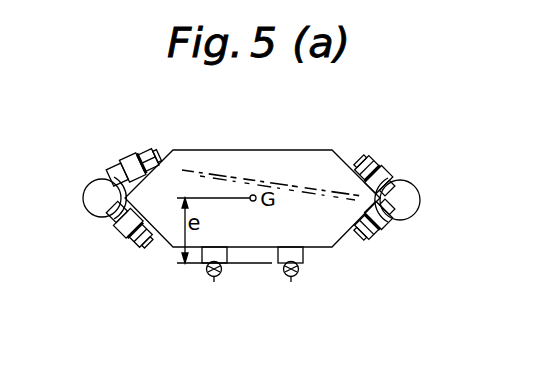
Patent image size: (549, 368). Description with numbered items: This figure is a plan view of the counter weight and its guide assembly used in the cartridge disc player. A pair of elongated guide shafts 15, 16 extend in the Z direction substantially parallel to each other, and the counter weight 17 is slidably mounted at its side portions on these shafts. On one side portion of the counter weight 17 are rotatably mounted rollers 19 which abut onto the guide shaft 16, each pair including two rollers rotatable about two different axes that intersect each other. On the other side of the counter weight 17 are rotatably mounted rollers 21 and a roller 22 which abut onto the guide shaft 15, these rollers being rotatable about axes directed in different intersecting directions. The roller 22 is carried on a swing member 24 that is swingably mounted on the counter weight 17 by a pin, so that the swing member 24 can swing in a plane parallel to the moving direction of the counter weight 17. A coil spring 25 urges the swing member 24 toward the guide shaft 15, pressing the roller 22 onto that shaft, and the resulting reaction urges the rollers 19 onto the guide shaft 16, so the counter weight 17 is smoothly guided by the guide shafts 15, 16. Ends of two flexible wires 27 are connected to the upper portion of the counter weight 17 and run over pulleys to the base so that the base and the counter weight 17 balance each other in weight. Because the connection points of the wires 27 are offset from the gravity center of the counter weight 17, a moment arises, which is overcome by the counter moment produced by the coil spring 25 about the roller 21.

The guide shaft 15 is at (88, 203).
The guide shaft 16 is at (416, 205).
The counter weight 17 is at (303, 160).
The rollers 19 is at (378, 163).
The rollers 21 is at (120, 242).
The roller 22 is at (113, 170).
The swing member 24 is at (128, 157).
The coil spring 25 is at (148, 150).
The flexible wires 27 is at (215, 278).